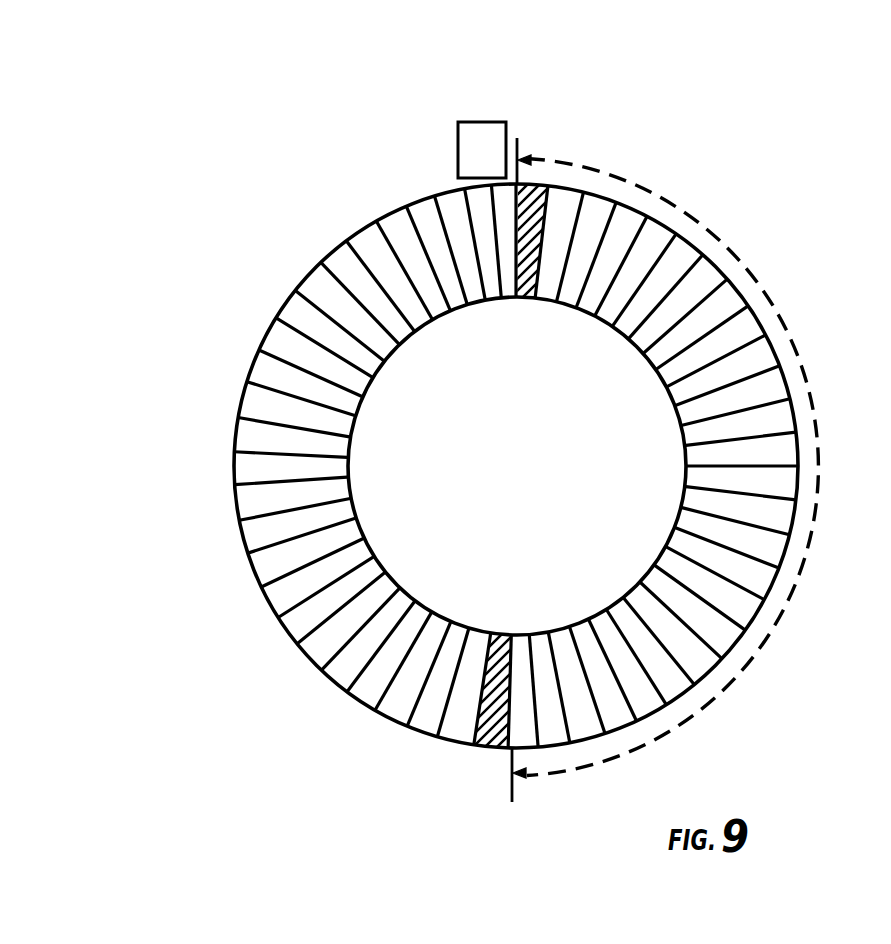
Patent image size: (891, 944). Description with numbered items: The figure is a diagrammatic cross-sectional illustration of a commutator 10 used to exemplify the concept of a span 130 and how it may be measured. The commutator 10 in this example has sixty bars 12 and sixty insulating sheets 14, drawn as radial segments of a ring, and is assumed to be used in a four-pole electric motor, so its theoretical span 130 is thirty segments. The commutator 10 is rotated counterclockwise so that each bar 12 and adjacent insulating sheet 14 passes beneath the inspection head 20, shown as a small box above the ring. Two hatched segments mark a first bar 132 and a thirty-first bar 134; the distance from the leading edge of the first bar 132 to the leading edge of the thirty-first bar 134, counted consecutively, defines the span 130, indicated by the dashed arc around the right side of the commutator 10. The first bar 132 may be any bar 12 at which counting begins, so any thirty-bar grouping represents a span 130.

The commutator 10 is at (203, 384).
The bar 12 is at (335, 262).
The insulating sheet 14 is at (297, 288).
The inspection head 20 is at (484, 140).
The span 130 is at (757, 281).
The first bar 132 is at (516, 214).
The thirty-first bar 134 is at (473, 745).